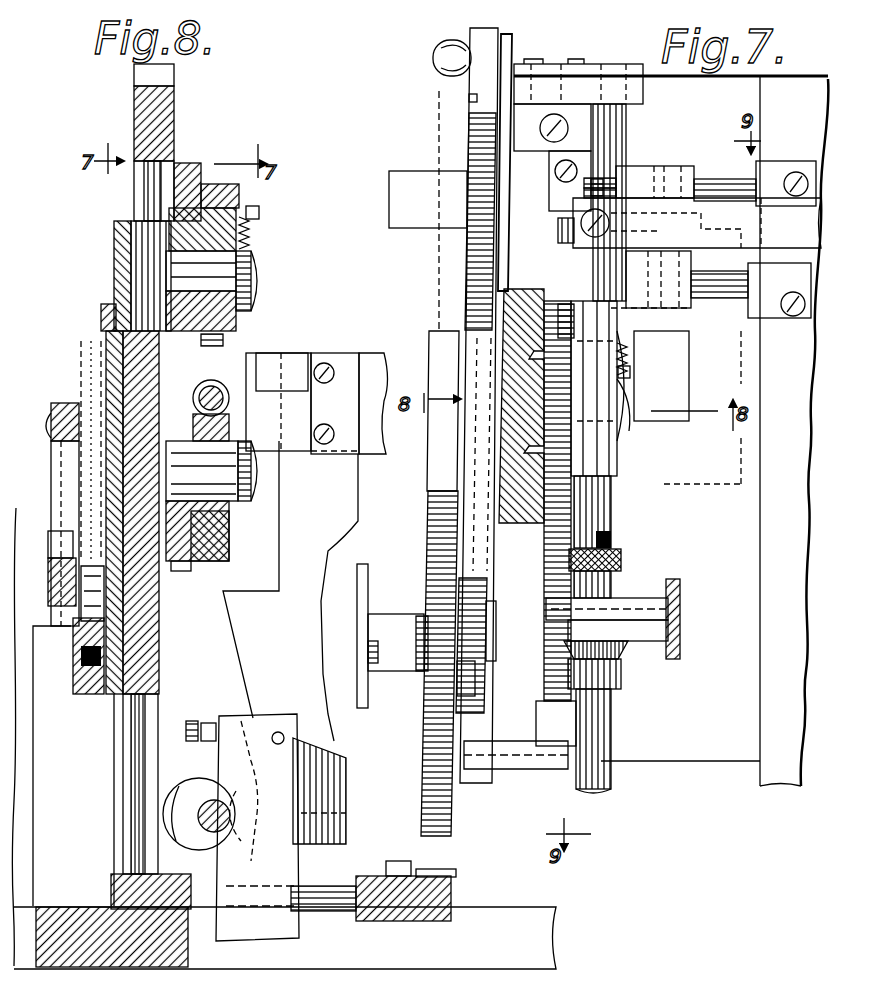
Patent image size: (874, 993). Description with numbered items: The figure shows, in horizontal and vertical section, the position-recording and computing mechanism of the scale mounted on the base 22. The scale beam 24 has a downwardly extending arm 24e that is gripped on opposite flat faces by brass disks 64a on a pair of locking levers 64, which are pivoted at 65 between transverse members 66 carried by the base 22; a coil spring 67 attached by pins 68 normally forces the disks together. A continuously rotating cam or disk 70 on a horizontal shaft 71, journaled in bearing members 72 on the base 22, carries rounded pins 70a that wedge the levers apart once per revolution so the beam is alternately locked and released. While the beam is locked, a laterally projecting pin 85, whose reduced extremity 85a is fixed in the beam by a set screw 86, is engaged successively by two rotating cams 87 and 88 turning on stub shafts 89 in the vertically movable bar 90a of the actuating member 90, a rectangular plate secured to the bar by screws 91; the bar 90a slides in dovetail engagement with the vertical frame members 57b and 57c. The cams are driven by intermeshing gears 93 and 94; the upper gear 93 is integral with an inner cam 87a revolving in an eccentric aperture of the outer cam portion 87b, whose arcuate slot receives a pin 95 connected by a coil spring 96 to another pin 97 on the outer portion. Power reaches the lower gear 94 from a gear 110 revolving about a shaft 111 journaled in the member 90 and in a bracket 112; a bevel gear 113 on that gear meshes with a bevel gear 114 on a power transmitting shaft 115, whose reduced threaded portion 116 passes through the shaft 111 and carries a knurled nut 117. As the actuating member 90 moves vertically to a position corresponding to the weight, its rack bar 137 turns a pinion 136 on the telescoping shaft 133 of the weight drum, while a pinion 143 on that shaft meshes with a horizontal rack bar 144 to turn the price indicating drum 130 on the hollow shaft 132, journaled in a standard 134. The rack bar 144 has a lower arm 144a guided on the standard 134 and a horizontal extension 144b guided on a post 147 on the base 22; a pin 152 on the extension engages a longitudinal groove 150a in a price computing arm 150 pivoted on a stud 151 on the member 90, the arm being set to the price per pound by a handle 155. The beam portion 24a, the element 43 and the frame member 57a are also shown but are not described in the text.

In FIG. 8, the base 22 is at (555, 950).
In FIG. 7, the base 22 is at (805, 70).
In FIG. 7, the beam 24 is at (697, 223).
In FIG. 8, the bracket arm 24a is at (386, 342).
In FIG. 8, the downwardly extending arm 24e is at (350, 527).
In FIG. 7, the downwardly extending arm 24e is at (724, 240).
In FIG. 8, the block 43 is at (315, 408).
In FIG. 7, the block 43 is at (688, 333).
In FIG. 8, the plate 57a is at (133, 95).
In FIG. 8, the lateral vertical frame member 57b is at (122, 770).
In FIG. 7, the lateral vertical frame member 57b is at (497, 322).
In FIG. 7, the parallel frame member 57c is at (522, 524).
In FIG. 8, the locking levers 64 is at (345, 790).
In FIG. 7, the locking levers 64 is at (686, 165).
In FIG. 8, the disks 64a is at (300, 740).
In FIG. 7, the disks 64a is at (657, 165).
In FIG. 8, the pivot 65 is at (322, 885).
In FIG. 7, the pivot 65 is at (757, 165).
In FIG. 8, the transverse members 66 is at (110, 890).
In FIG. 7, the transverse members 66 is at (782, 785).
In FIG. 8, the coil spring 67 is at (207, 722).
In FIG. 7, the coil spring 67 is at (590, 185).
In FIG. 8, the pins 68 is at (188, 722).
In FIG. 7, the pins 68 is at (548, 185).
In FIG. 8, the cam or disk 70 is at (170, 822).
In FIG. 7, the cam or disk 70 is at (557, 240).
In FIG. 8, the pins 70a is at (345, 812).
In FIG. 8, the horizontal shaft 71 is at (205, 800).
In FIG. 7, the horizontal shaft 71 is at (600, 788).
In FIG. 8, the bearing members 72 is at (165, 803).
In FIG. 7, the bearing members 72 is at (642, 86).
In FIG. 8, the laterally projecting pin 85 is at (228, 400).
In FIG. 7, the laterally projecting pin 85 is at (593, 280).
In FIG. 7, the reduced extremity 85a is at (617, 178).
In FIG. 8, the set screw 86 is at (222, 339).
In FIG. 7, the set screw 86 is at (572, 227).
In FIG. 8, the cam 87 is at (226, 183).
In FIG. 7, the cam 87 is at (580, 470).
In FIG. 8, the inner cam 87a is at (235, 302).
In FIG. 8, the outer portion of the cam 87b is at (240, 210).
In FIG. 8, the cam 88 is at (207, 560).
In FIG. 8, the stub shafts 89 is at (240, 280).
In FIG. 7, the stub shafts 89 is at (618, 430).
In FIG. 8, the actuating member 90 is at (113, 228).
In FIG. 7, the actuating member 90 is at (503, 472).
In FIG. 8, the vertically movable bar 90a is at (125, 350).
In FIG. 7, the vertically movable bar 90a is at (515, 422).
In FIG. 8, the screws 91 is at (100, 310).
In FIG. 8, the upper gear 93 is at (190, 165).
In FIG. 7, the upper gear 93 is at (605, 520).
In FIG. 8, the lower gear 94 is at (176, 572).
In FIG. 8, the pin 95 is at (253, 270).
In FIG. 7, the pin 95 is at (624, 350).
In FIG. 8, the coil spring 96 is at (258, 228).
In FIG. 7, the coil spring 96 is at (628, 362).
In FIG. 8, the pin 97 is at (258, 211).
In FIG. 7, the pin 97 is at (629, 372).
In FIG. 7, the gear 110 is at (548, 745).
In FIG. 7, the shaft 111 is at (640, 597).
In FIG. 7, the bracket 112 is at (680, 590).
In FIG. 7, the bevel gear 113 is at (610, 672).
In FIG. 7, the bevel gear 114 is at (625, 650).
In FIG. 7, the power transmitting shaft 115 is at (605, 742).
In FIG. 8, the reduced portion 116 is at (73, 766).
In FIG. 7, the reduced portion 116 is at (610, 540).
In FIG. 7, the nut 117 is at (620, 556).
In FIG. 8, the price indicating drum 130 is at (372, 565).
In FIG. 8, the hollow shaft 132 is at (428, 672).
In FIG. 7, the telescoping shaft 133 is at (460, 618).
In FIG. 8, the standard 134 is at (395, 613).
In FIG. 7, the pinion 136 is at (480, 656).
In FIG. 7, the rack bar 137 is at (475, 693).
In FIG. 8, the pinion 143 is at (425, 693).
In FIG. 8, the horizontal rack bar 144 is at (85, 395).
In FIG. 8, the lower arm 144a is at (47, 540).
In FIG. 7, the horizontal extension 144b is at (468, 98).
In FIG. 8, the post 147 is at (33, 752).
In FIG. 7, the post 147 is at (388, 172).
In FIG. 8, the price computing arm 150 is at (85, 695).
In FIG. 7, the price computing arm 150 is at (467, 116).
In FIG. 8, the longitudinal groove 150a is at (78, 658).
In FIG. 7, the longitudinal groove 150a is at (468, 97).
In FIG. 8, the stud 151 is at (72, 672).
In FIG. 7, the stud 151 is at (440, 372).
In FIG. 8, the pin 152 is at (62, 525).
In FIG. 7, the pin 152 is at (458, 300).
In FIG. 8, the handle 155 is at (50, 432).
In FIG. 7, the handle 155 is at (432, 56).